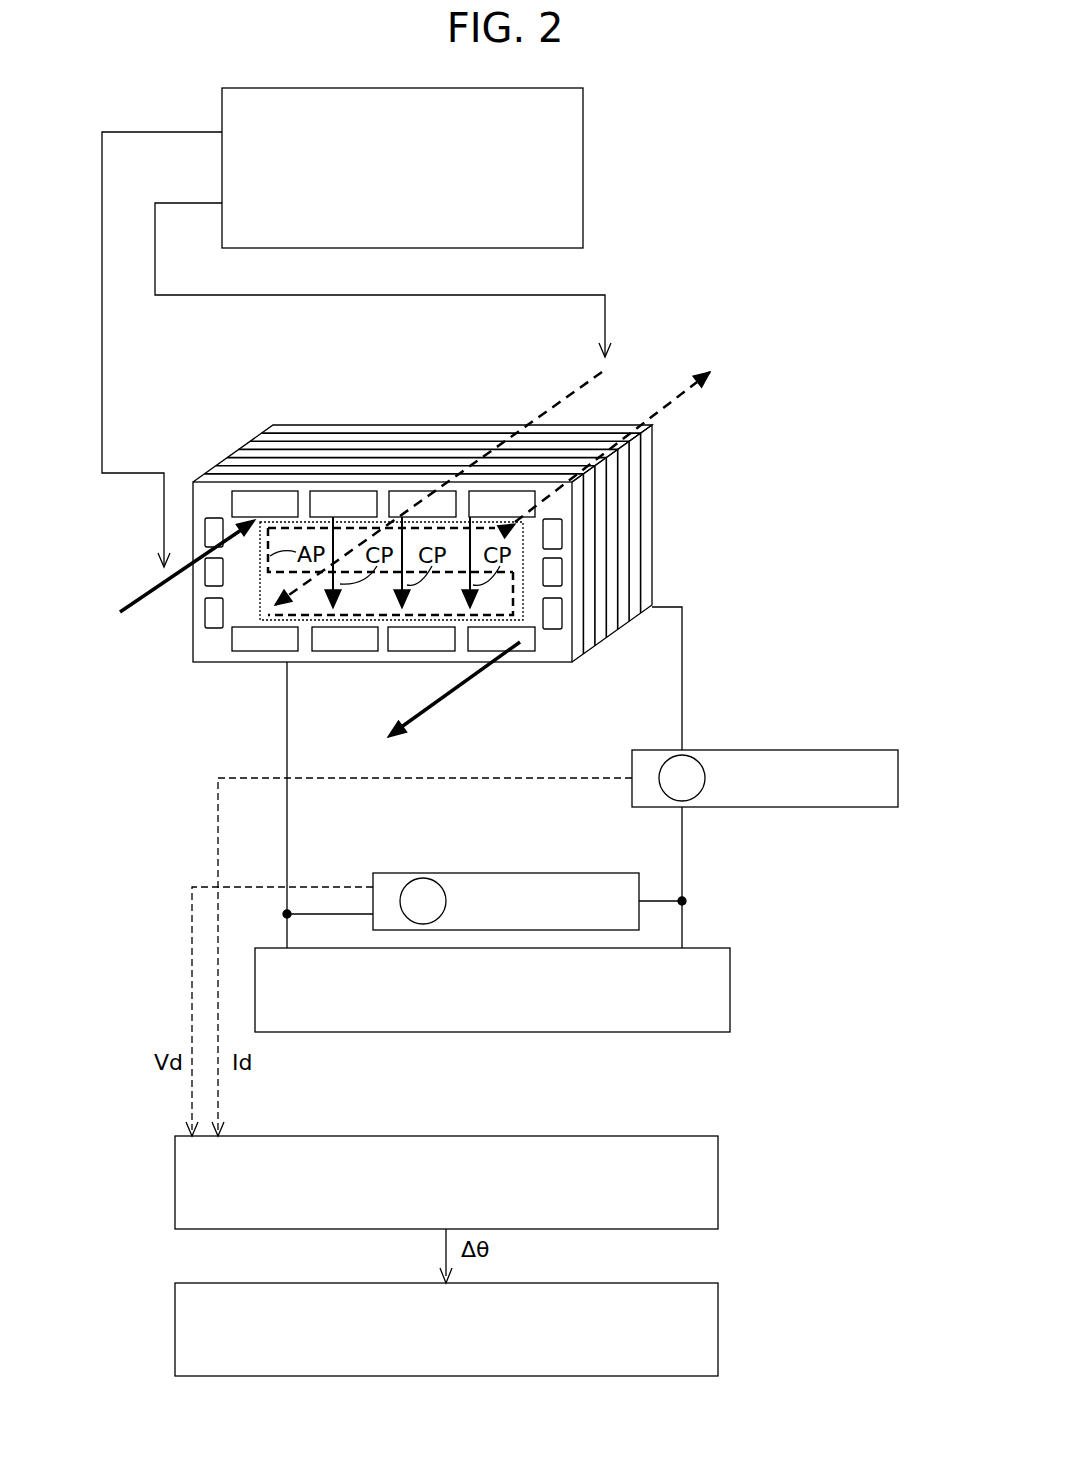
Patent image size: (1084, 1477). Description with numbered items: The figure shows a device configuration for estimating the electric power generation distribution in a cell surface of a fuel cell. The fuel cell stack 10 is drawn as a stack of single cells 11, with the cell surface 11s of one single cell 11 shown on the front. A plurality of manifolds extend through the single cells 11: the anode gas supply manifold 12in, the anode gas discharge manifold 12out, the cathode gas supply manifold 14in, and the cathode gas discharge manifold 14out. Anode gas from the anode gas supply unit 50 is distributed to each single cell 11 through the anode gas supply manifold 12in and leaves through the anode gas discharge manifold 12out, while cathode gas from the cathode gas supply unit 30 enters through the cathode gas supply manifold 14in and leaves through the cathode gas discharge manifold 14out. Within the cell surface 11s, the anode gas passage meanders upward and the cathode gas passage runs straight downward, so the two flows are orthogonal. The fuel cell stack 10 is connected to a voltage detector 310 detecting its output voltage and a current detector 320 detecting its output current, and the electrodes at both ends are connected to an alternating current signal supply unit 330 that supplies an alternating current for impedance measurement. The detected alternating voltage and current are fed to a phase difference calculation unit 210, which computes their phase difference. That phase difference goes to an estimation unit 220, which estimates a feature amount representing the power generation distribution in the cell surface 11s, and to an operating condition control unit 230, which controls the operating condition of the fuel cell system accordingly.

The fuel cell stack 10 is at (776, 431).
The single cell 11 is at (258, 435).
The cell surface 11s is at (258, 583).
The anode gas supply manifold 12in is at (215, 617).
The anode gas discharge manifold 12out is at (556, 540).
The cathode gas supply manifold 14in is at (473, 500).
The cathode gas discharge manifold 14out is at (475, 643).
The cathode gas supply unit 30 is at (142, 596).
The anode gas supply unit 50 is at (672, 396).
The phase difference calculation unit 210 is at (623, 1136).
The estimation unit 220 is at (623, 1283).
The operating condition control unit 230 is at (583, 168).
The voltage detector 310 is at (592, 873).
The current detector 320 is at (862, 750).
The alternating current signal supply unit 330 is at (703, 948).